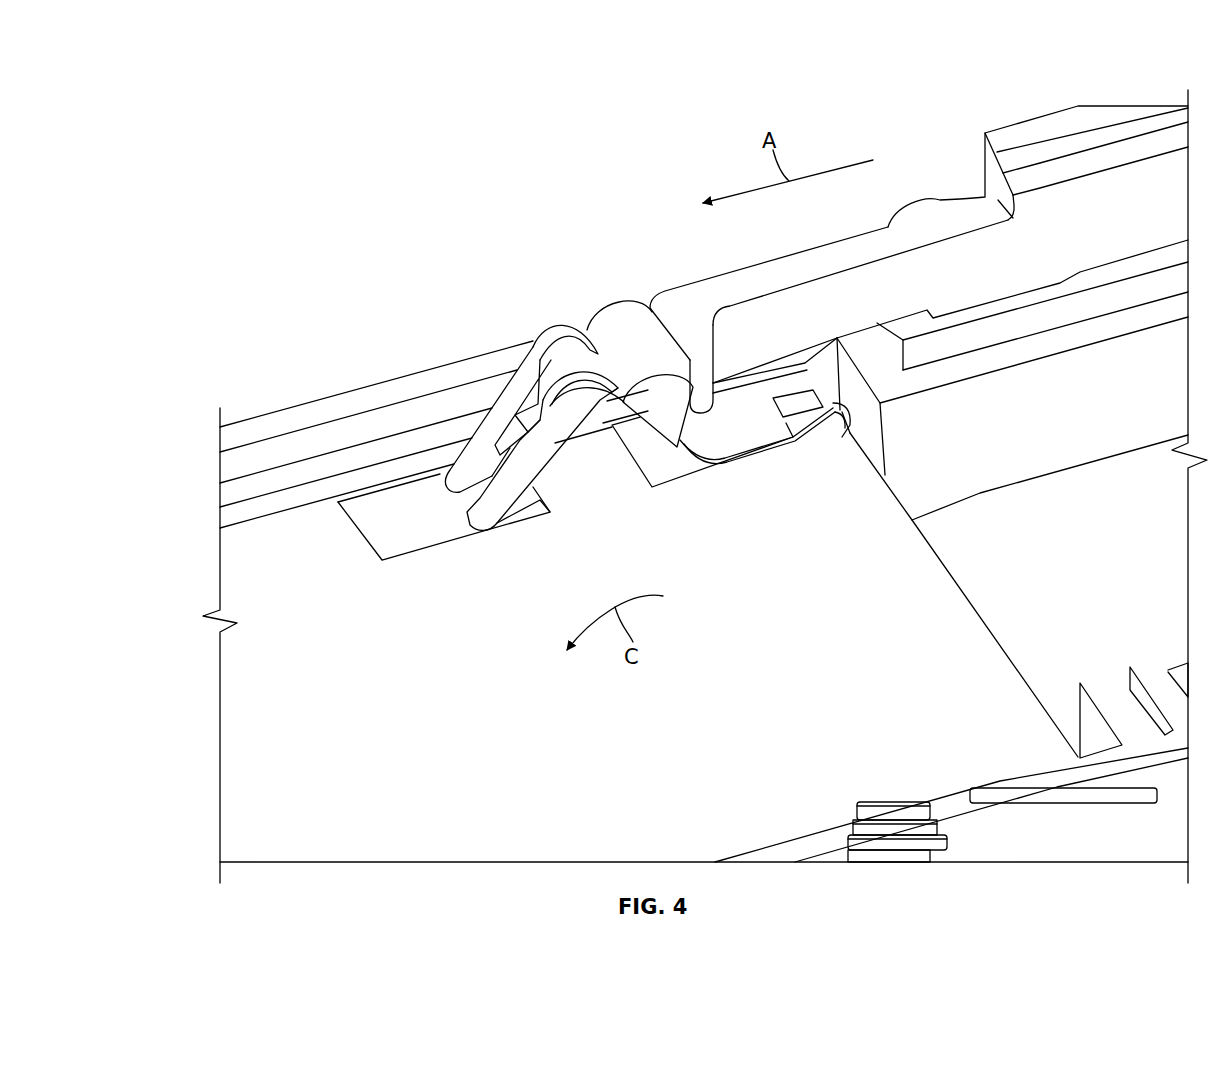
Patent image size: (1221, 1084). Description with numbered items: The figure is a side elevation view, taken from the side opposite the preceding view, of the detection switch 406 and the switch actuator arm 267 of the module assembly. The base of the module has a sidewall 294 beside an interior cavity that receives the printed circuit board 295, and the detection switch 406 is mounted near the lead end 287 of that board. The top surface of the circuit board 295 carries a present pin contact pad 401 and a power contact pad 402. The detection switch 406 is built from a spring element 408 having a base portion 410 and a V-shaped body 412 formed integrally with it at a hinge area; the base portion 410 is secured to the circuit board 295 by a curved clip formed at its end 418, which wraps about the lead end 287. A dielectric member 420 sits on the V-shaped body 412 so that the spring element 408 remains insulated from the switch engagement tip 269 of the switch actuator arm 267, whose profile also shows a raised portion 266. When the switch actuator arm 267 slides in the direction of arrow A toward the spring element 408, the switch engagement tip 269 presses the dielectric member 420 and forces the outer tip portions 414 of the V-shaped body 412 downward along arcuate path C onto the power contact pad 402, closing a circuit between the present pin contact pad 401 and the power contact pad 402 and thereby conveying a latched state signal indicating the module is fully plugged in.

The protrusion on actuator bar 266 is at (921, 210).
The switch actuator arm 267 is at (837, 256).
The switch engagement tip 269 is at (706, 343).
The lead end 287 is at (972, 597).
The sidewall 294 is at (257, 426).
The printed circuit board 295 is at (228, 824).
The present pin contact pad 401 is at (668, 466).
The power contact pad 402 is at (388, 545).
The detection switch 406 is at (514, 425).
The spring element 408 is at (546, 334).
The base portion 410 is at (747, 438).
The V-shaped body 412 is at (523, 382).
The outer tip portions 414 is at (487, 517).
The end 418 is at (842, 426).
The dielectric member 420 is at (621, 320).